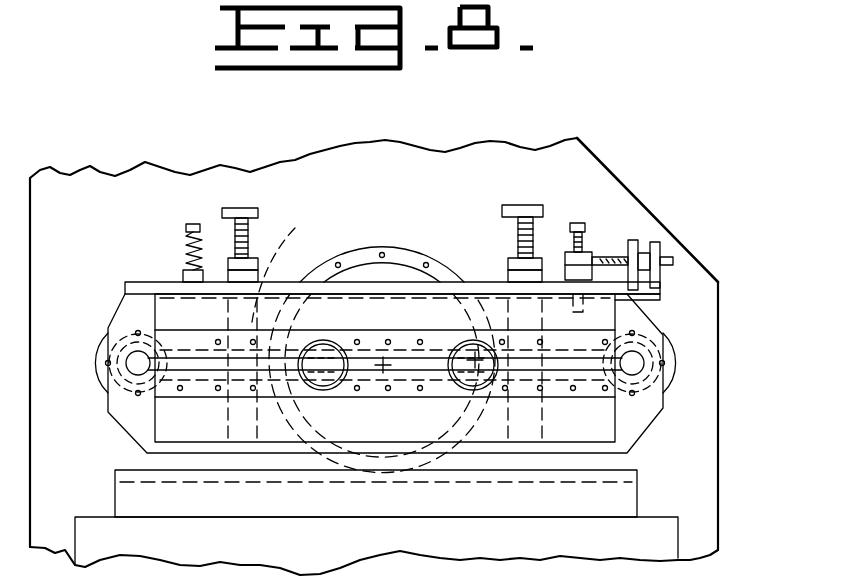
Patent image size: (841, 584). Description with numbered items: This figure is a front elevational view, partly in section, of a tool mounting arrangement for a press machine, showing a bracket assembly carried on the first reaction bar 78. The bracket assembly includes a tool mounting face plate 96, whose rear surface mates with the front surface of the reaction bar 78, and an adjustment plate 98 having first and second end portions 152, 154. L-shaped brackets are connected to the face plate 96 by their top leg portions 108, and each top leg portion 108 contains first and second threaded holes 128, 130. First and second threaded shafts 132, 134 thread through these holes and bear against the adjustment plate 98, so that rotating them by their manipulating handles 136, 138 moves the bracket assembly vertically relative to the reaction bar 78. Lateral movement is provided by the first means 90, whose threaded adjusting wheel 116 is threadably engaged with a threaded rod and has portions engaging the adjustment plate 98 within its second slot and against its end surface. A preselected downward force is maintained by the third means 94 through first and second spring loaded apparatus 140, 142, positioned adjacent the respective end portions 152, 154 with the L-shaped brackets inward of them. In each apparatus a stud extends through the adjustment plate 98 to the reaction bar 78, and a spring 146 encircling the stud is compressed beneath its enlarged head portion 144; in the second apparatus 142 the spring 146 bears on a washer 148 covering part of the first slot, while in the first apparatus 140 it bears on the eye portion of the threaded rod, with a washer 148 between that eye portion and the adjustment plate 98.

The first reaction bar 78 is at (126, 420).
The first means for moving the bracket assembly laterally 90 is at (694, 262).
The third means for maintaining a preselected downwardly directed force 94 is at (593, 230).
The tool mounting face plate 96 is at (596, 433).
The adjustment plate 98 is at (125, 286).
The top leg portion 108 is at (256, 265).
The threaded adjusting wheel 116 is at (655, 258).
The first threaded hole 128 is at (547, 258).
The second threaded hole 130 is at (373, 342).
The first threaded shaft 132 is at (518, 238).
The second threaded shaft 134 is at (250, 240).
The manipulating handle 136 is at (488, 225).
The manipulating handle 138 is at (256, 213).
The first spring loaded apparatus 140 is at (590, 247).
The second spring loaded apparatus 142 is at (127, 199).
The enlarged head portion 144 is at (191, 224).
The spring 146 is at (186, 250).
The washer 148 is at (283, 226).
The first end portion 152 is at (650, 298).
The second end portion 154 is at (122, 298).